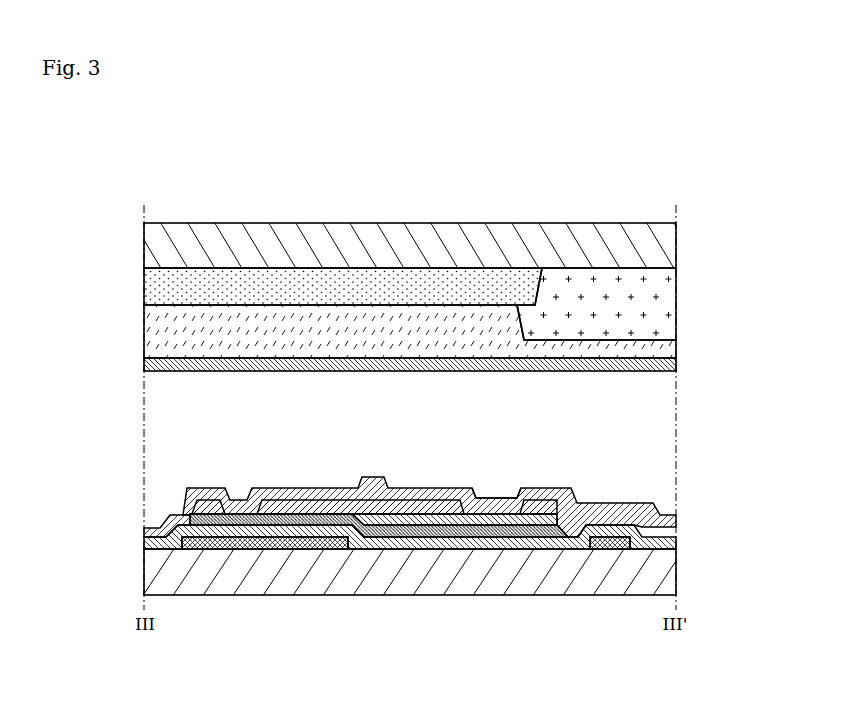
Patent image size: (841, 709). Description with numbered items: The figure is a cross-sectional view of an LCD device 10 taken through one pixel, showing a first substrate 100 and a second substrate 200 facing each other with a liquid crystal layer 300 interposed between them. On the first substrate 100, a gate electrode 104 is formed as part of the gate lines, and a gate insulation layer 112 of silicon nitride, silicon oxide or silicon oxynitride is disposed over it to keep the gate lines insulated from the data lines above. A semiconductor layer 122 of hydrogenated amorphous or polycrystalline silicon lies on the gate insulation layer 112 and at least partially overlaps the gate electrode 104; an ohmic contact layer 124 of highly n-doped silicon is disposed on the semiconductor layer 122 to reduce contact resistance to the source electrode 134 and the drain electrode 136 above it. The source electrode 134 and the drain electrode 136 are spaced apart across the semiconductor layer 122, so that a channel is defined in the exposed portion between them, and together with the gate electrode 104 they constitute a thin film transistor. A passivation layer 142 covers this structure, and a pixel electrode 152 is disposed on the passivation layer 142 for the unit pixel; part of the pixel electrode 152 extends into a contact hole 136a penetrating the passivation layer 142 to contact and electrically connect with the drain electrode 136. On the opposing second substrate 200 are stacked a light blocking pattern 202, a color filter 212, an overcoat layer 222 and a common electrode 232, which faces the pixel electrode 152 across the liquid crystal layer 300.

The LCD device 10 is at (448, 183).
The first substrate 100 is at (152, 575).
The gate electrode 104 is at (240, 546).
The gate insulation layer 112 is at (150, 544).
The semiconductor layer 122 is at (208, 522).
The ohmic contact layer 124 is at (293, 513).
The source electrode 134 is at (198, 506).
The drain electrode 136 is at (335, 503).
The contact hole 136a is at (495, 481).
The passivation layer 142 is at (148, 531).
The pixel electrode 152 is at (486, 503).
The second substrate 200 is at (150, 243).
The light blocking pattern 202 is at (150, 289).
The color filter 212 is at (660, 300).
The overcoat layer 222 is at (150, 338).
The common electrode 232 is at (150, 366).
The liquid crystal layer 300 is at (657, 428).